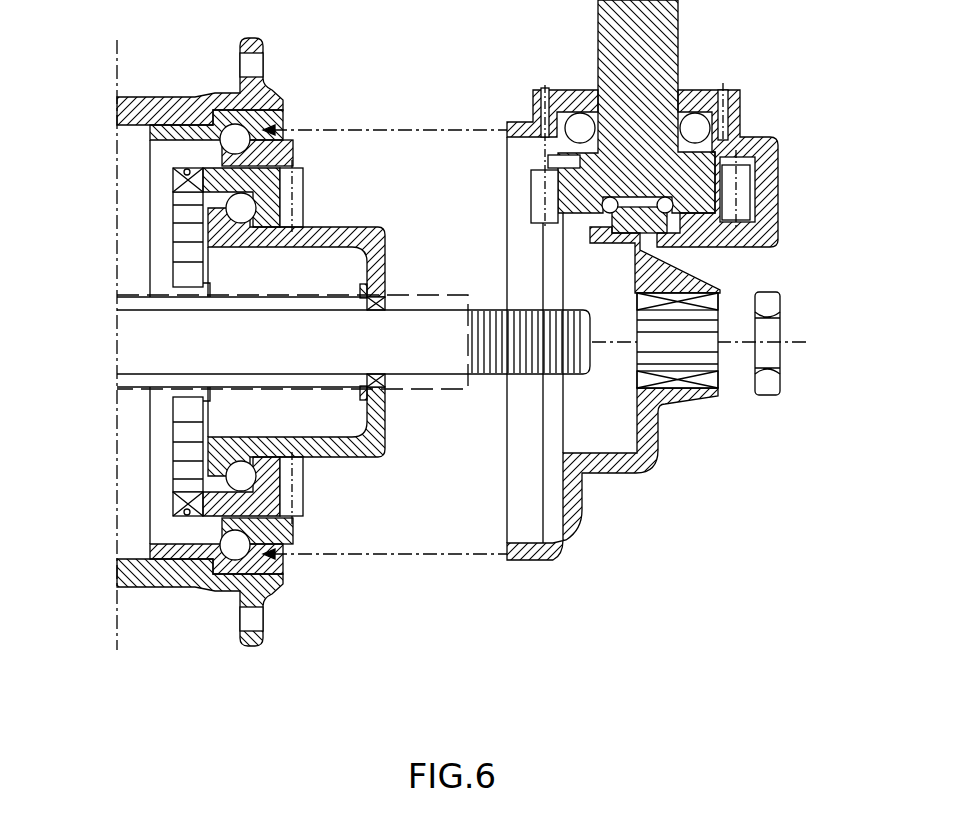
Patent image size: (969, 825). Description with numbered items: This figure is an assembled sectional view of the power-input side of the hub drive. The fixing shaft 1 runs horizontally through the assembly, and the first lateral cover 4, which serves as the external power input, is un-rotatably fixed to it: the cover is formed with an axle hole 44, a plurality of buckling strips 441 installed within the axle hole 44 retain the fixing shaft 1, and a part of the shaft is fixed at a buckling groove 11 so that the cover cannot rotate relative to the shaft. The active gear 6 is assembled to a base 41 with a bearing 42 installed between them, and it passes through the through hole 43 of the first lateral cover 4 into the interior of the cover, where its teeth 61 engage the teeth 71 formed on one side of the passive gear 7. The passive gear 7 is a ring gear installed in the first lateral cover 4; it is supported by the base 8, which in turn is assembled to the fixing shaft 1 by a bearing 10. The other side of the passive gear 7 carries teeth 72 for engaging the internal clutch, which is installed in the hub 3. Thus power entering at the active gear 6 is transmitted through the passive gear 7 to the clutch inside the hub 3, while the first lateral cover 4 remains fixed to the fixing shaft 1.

The fixing shaft 1 is at (493, 377).
The hub 3 is at (170, 97).
The first lateral cover 4 is at (658, 440).
The active gear 6 is at (605, 68).
The passive gear 7 is at (282, 195).
The base 8 is at (366, 228).
The bearing 10 is at (238, 475).
The buckling groove 11 is at (377, 308).
The base 41 is at (755, 167).
The bearing 42 is at (698, 118).
The through hole 43 is at (548, 162).
The axle hole 44 is at (675, 353).
The buckling strips 441 is at (712, 378).
The teeth 61 is at (530, 208).
The teeth 71 is at (297, 210).
The teeth 72 is at (172, 180).